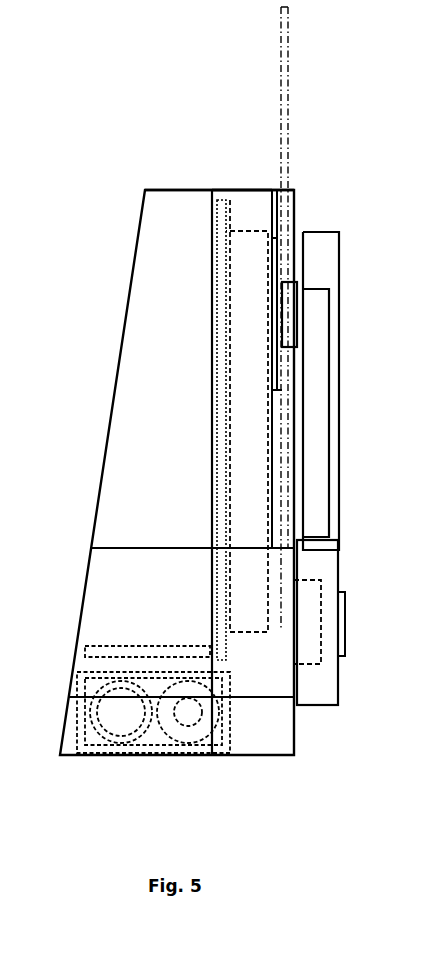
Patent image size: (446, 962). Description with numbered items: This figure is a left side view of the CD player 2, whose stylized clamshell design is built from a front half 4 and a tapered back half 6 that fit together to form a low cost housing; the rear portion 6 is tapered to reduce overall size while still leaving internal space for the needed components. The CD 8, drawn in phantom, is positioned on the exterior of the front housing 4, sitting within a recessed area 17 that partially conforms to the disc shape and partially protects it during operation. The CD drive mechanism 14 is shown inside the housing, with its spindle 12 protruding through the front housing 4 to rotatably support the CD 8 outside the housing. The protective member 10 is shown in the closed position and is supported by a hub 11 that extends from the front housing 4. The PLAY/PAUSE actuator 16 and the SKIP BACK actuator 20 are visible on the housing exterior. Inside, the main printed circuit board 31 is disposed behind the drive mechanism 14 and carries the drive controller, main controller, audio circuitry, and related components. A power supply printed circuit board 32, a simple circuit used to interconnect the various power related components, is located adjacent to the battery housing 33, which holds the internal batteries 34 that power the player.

The CD player 2 is at (55, 500).
The front half of housing 4 is at (233, 190).
The back half of housing 6 is at (172, 190).
The CD 8 is at (281, 88).
The protective member 10 is at (339, 438).
The hub 11 is at (318, 664).
The spindle 12 is at (299, 282).
The CD drive mechanism 14 is at (247, 231).
The PLAY/PAUSE actuator 16 is at (345, 616).
The recess 17 is at (277, 200).
The SKIP BACK actuator 20 is at (297, 712).
The main printed circuit board 31 is at (217, 305).
The power supply printed circuit board 32 is at (155, 646).
The battery housing 33 is at (78, 738).
The internal batteries 34 is at (166, 743).